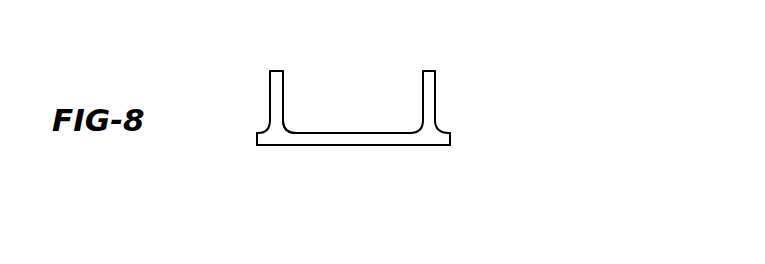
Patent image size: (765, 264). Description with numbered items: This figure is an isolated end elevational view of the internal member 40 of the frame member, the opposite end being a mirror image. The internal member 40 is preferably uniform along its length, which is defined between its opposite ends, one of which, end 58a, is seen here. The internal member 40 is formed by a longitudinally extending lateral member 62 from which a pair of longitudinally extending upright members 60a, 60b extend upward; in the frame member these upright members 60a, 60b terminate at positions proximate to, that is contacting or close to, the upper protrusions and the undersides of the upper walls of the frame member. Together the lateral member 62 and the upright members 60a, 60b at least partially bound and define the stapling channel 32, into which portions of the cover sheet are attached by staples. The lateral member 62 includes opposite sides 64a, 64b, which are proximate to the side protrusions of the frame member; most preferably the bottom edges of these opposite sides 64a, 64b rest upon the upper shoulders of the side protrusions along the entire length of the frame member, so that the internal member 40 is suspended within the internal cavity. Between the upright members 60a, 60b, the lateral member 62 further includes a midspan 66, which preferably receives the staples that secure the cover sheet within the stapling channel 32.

The stapling channel 32 is at (354, 100).
The internal member 40 is at (523, 101).
The end 58a is at (342, 133).
The upright member 60a is at (270, 77).
The upright member 60b is at (435, 83).
The lateral member 62 is at (407, 146).
The side 64a is at (257, 143).
The side 64b is at (450, 138).
The midspan 66 is at (327, 133).